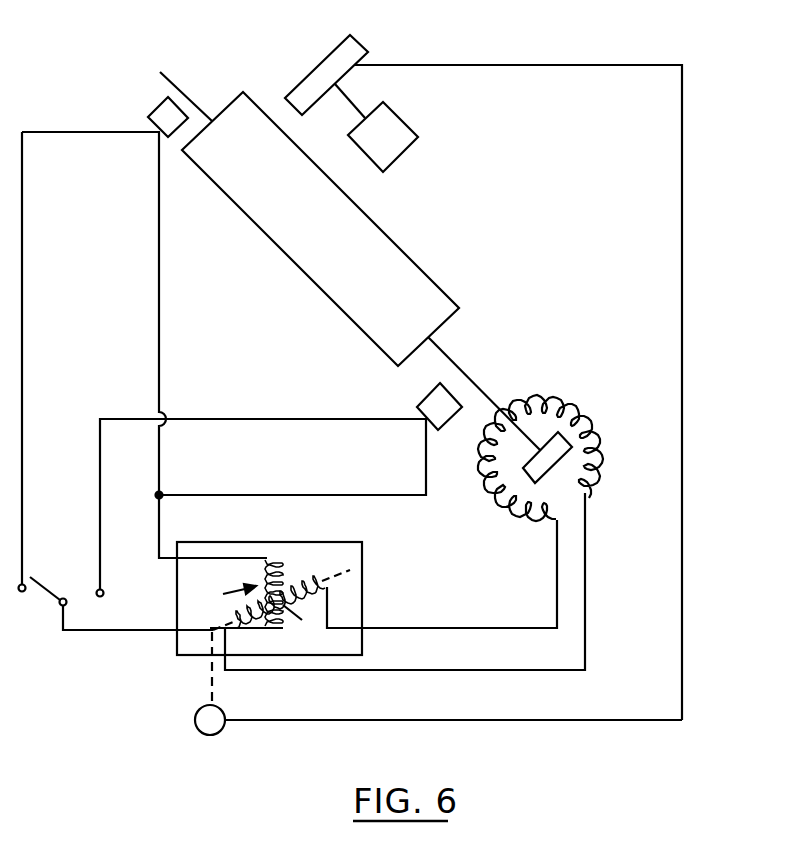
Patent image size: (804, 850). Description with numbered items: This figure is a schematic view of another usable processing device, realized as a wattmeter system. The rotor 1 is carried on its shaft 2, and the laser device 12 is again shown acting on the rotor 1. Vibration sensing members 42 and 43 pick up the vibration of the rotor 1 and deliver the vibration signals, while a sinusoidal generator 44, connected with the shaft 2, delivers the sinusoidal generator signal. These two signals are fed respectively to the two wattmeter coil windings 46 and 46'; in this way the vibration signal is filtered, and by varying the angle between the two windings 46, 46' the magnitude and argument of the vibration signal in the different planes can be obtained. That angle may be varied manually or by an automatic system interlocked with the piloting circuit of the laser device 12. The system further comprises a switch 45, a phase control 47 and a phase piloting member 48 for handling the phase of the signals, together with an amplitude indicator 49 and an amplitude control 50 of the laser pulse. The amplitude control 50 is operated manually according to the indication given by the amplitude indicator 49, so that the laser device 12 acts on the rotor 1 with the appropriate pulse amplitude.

The rotor 1 is at (383, 228).
The shaft of the rotor 2 is at (183, 92).
The laser device 12 is at (313, 80).
The vibration sensing member 42 is at (155, 110).
The vibration sensing member 43 is at (428, 400).
The sinusoidal generator 44 is at (603, 447).
The switch 45 is at (113, 604).
The wattmeter coil winding 46 is at (269, 577).
The wattmeter coil winding 46' is at (329, 591).
The phase control 47 is at (205, 723).
The phase piloting member 48 is at (681, 241).
The amplitude indicator 49 is at (221, 593).
The amplitude control 50 is at (390, 127).